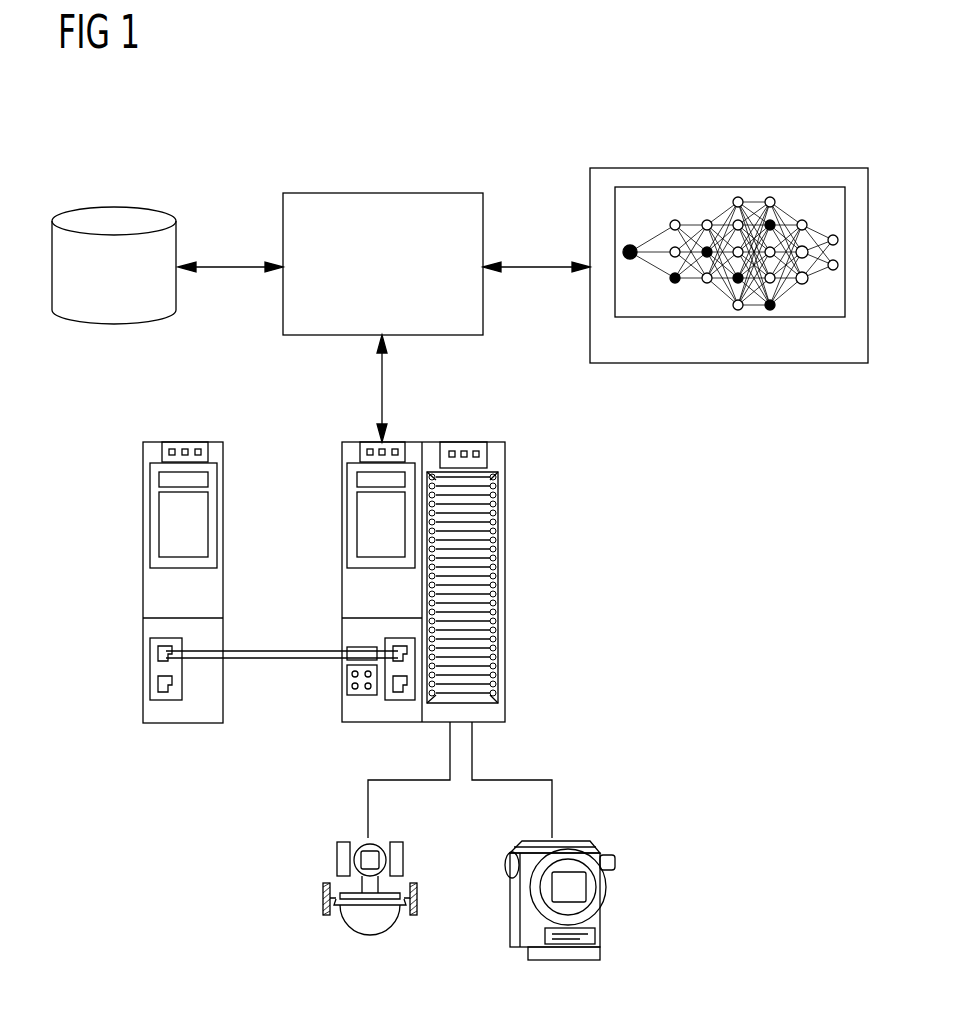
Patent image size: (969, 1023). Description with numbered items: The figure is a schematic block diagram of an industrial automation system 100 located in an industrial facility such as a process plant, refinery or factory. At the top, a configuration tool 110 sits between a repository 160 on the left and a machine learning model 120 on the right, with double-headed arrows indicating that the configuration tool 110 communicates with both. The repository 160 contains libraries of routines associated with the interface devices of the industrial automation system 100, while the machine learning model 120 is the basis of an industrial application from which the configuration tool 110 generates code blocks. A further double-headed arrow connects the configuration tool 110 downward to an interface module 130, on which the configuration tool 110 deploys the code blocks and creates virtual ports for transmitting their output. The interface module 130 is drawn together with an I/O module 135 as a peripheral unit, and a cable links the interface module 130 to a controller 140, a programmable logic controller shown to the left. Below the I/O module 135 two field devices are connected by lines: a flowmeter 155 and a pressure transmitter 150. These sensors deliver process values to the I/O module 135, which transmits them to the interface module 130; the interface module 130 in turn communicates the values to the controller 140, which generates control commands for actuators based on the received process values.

The industrial automation system 100 is at (806, 126).
The configuration tool 110 is at (383, 193).
The machine learning model 120 is at (708, 168).
The interface module 130 is at (415, 442).
The I/O module 135 is at (505, 590).
The controller 140 is at (185, 442).
The pressure transmitter 150 is at (604, 903).
The flowmeter 155 is at (336, 858).
The repository 160 is at (113, 207).